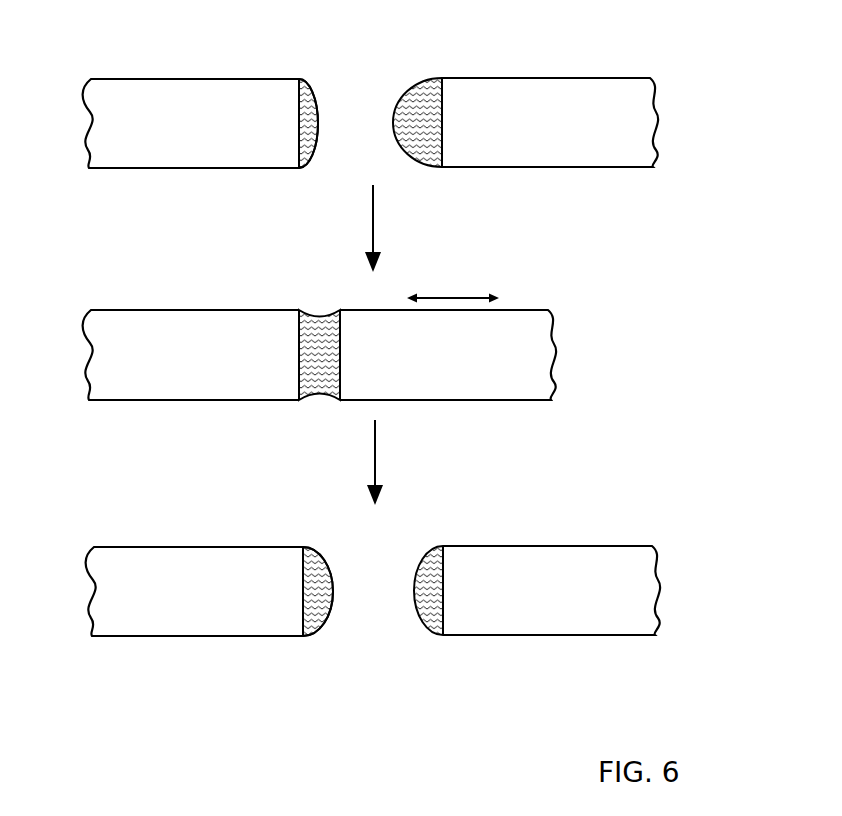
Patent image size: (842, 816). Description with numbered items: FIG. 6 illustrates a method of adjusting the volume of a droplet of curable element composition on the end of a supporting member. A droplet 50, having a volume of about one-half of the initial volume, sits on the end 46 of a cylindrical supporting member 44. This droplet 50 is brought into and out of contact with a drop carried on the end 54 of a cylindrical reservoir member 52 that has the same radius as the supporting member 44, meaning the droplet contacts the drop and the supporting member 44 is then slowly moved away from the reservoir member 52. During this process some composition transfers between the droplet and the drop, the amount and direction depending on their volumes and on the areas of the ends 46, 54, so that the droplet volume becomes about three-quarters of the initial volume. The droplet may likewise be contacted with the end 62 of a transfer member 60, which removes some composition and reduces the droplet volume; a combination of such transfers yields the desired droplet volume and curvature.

The supporting member 44 is at (132, 172).
The end of supporting member 46 is at (296, 105).
The droplet 50 is at (312, 74).
The reservoir member 52 is at (608, 170).
The end of reservoir member 54 is at (446, 103).
The transfer member 60 is at (612, 640).
The end of transfer member 62 is at (447, 567).